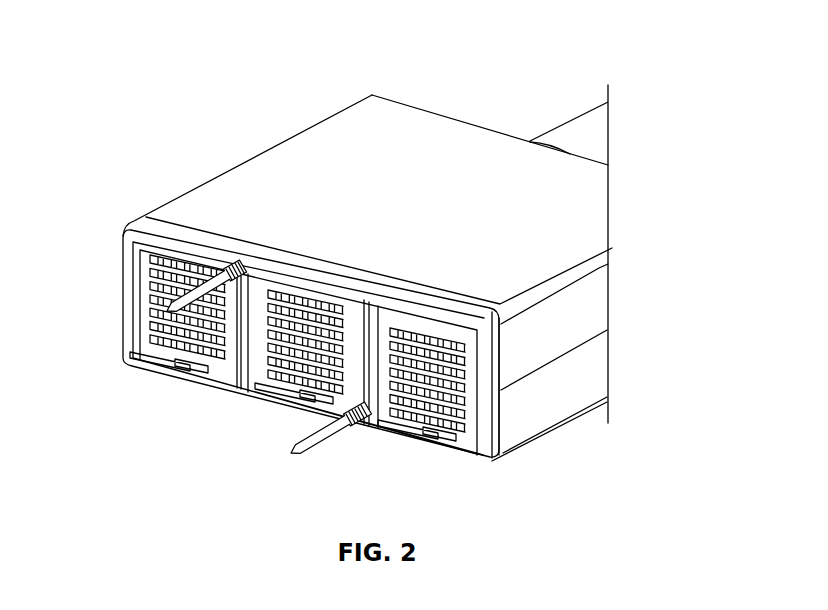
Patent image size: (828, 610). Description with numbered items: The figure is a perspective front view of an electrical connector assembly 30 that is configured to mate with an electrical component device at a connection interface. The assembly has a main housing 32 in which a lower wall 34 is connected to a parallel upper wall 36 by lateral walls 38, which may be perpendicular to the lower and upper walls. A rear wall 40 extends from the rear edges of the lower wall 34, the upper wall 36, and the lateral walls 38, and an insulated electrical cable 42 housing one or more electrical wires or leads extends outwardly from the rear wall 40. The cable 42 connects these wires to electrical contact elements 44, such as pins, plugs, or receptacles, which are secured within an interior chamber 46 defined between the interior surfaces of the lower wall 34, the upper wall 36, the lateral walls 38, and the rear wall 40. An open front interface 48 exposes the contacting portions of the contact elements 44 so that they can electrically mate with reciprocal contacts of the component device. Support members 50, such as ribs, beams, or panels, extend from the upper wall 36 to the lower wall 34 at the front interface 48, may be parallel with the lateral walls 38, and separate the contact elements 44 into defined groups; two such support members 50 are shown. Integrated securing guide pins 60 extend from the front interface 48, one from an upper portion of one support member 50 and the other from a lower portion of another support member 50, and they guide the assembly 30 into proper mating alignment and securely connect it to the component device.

The electrical connector assembly 30 is at (147, 104).
The main housing 32 is at (288, 138).
The lower wall 34 is at (512, 455).
The upper wall 36 is at (391, 170).
The lateral walls 38 is at (177, 194).
The rear wall 40 is at (493, 129).
The insulated electrical cable 42 is at (584, 129).
The electrical contact elements 44 is at (160, 358).
The interior chamber 46 is at (165, 292).
The open front interface 48 is at (200, 394).
The support members 50 is at (362, 330).
The integrated securing guide pins 60 is at (180, 310).